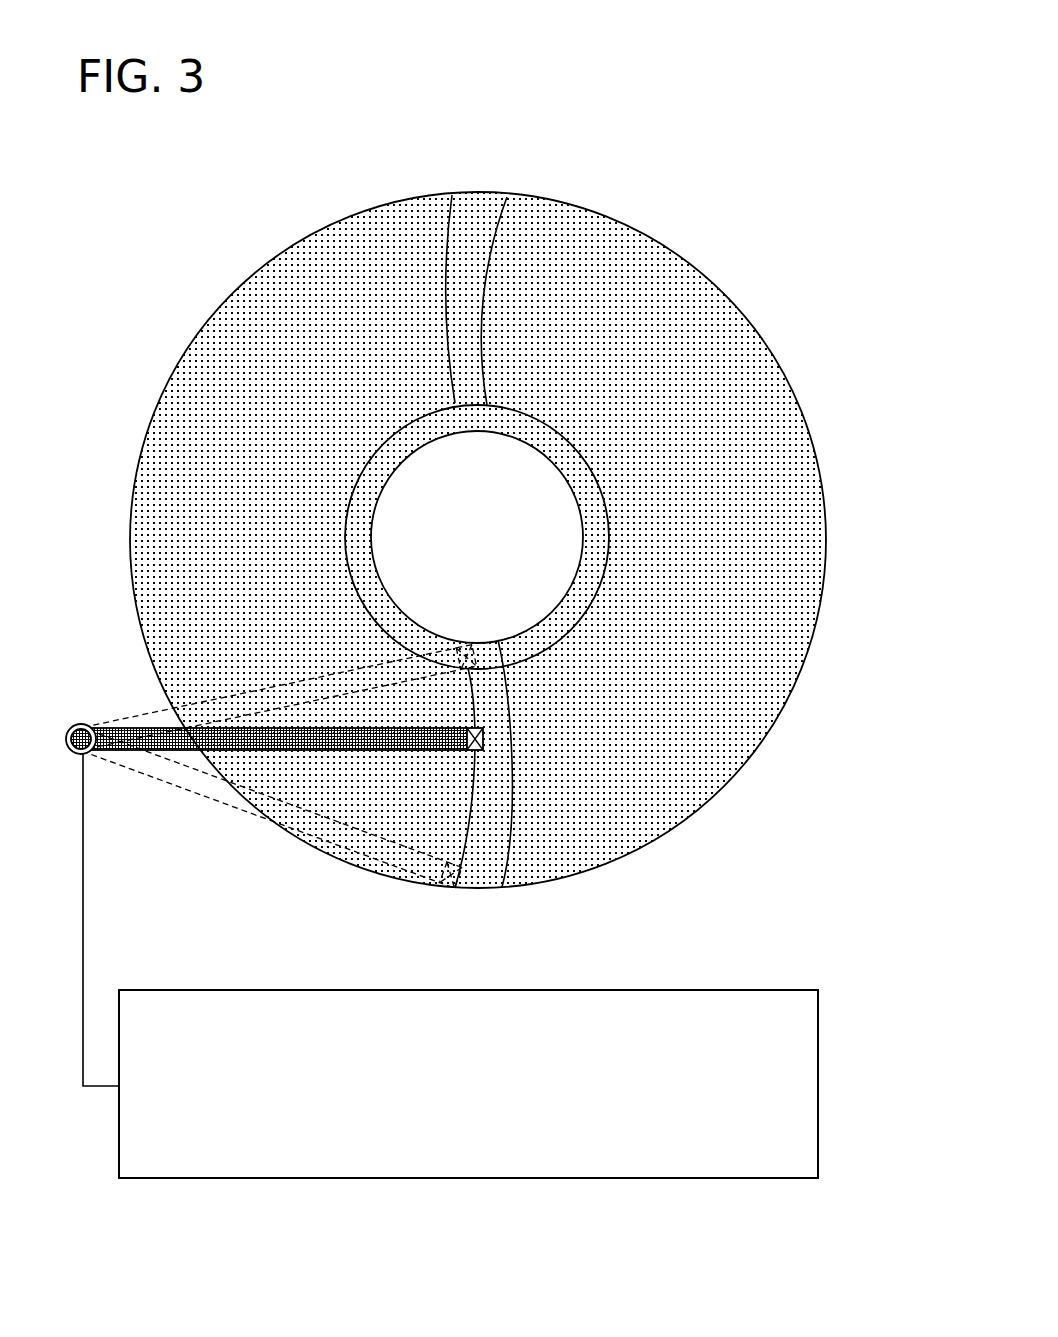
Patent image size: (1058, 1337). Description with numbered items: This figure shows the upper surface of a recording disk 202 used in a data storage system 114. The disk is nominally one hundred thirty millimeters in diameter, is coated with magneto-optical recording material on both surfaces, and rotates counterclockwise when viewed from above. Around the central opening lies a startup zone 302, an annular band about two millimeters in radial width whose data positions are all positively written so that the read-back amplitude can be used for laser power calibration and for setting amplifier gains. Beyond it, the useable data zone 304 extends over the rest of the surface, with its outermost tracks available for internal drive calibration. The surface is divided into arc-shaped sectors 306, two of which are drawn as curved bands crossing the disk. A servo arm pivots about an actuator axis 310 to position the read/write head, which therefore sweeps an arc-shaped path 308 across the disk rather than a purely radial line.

The data storage system 114 is at (708, 81).
The recording disk 202 is at (708, 262).
The startup zone 302 is at (594, 504).
The useable data zone 304 is at (734, 500).
The arc-shaped sectors 306 is at (480, 208).
The arc-shaped path 308 is at (459, 770).
The actuator axis 310 is at (77, 754).